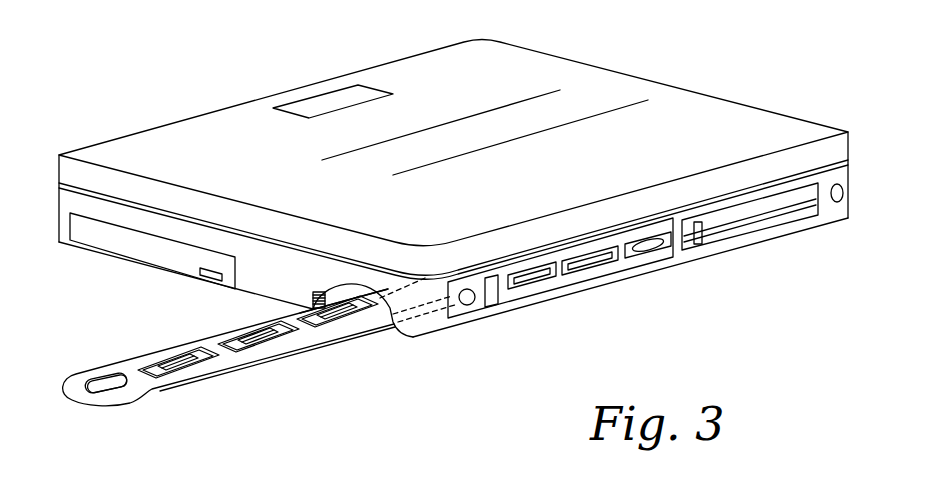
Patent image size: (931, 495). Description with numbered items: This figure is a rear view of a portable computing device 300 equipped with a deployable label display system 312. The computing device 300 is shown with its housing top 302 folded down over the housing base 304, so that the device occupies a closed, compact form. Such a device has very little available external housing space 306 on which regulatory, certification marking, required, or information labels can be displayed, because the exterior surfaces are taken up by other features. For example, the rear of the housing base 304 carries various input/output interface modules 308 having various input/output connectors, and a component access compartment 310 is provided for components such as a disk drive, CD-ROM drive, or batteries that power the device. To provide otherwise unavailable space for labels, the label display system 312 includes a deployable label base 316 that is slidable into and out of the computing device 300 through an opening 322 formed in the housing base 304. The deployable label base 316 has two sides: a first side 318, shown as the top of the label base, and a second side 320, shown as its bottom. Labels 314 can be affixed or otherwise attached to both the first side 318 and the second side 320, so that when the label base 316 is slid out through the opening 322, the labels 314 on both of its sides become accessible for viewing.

The portable computing device 300 is at (633, 48).
The housing top 302 is at (727, 97).
The housing base 304 is at (757, 245).
The available external housing space 306 is at (270, 264).
The input/output interface modules 308 is at (625, 265).
The component access compartment 310 is at (137, 230).
The label display system 312 is at (188, 418).
The labels 314 is at (187, 352).
The first side 318 is at (135, 358).
The deployable label base 316 is at (327, 345).
The second side 320 is at (243, 370).
The opening 322 is at (347, 282).